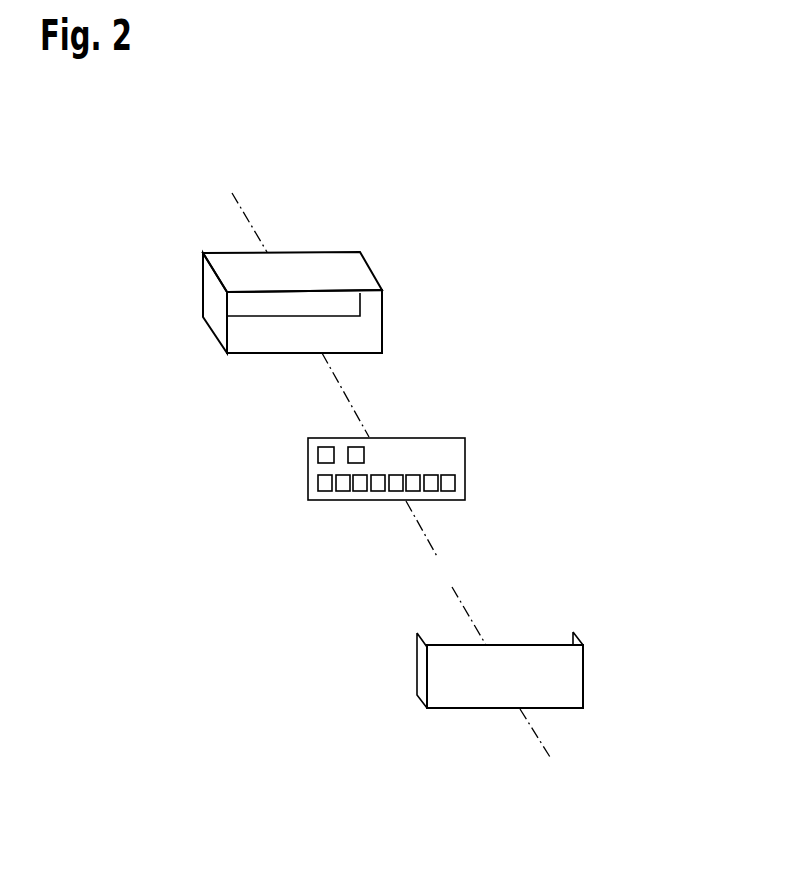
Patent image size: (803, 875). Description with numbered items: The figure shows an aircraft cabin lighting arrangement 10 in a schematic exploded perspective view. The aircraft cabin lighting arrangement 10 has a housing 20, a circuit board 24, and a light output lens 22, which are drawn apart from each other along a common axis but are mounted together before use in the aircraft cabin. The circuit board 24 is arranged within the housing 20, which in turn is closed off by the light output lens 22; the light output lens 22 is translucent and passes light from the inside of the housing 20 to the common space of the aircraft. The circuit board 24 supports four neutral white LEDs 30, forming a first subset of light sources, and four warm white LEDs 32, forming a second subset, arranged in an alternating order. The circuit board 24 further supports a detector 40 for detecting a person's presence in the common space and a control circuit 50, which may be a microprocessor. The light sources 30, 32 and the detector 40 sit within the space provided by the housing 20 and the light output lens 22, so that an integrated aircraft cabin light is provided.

The aircraft cabin lighting arrangement 10 is at (600, 422).
The housing 20 is at (358, 277).
The light output lens 22 is at (568, 673).
The circuit board 24 is at (450, 455).
The neutral white LEDs 30 is at (325, 492).
The warm white LEDs 32 is at (343, 492).
The detector 40 is at (325, 443).
The control circuit 50 is at (364, 455).